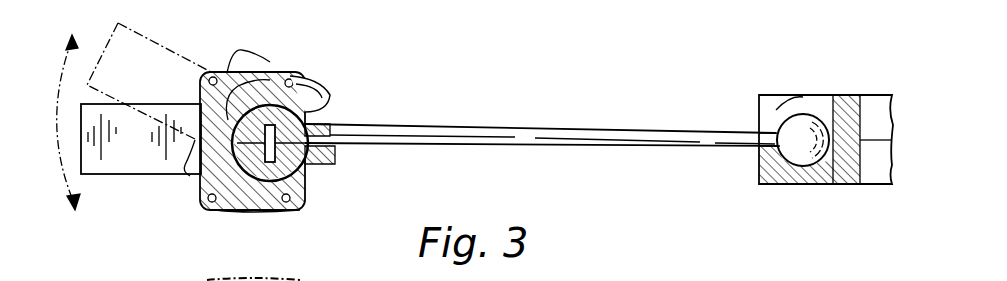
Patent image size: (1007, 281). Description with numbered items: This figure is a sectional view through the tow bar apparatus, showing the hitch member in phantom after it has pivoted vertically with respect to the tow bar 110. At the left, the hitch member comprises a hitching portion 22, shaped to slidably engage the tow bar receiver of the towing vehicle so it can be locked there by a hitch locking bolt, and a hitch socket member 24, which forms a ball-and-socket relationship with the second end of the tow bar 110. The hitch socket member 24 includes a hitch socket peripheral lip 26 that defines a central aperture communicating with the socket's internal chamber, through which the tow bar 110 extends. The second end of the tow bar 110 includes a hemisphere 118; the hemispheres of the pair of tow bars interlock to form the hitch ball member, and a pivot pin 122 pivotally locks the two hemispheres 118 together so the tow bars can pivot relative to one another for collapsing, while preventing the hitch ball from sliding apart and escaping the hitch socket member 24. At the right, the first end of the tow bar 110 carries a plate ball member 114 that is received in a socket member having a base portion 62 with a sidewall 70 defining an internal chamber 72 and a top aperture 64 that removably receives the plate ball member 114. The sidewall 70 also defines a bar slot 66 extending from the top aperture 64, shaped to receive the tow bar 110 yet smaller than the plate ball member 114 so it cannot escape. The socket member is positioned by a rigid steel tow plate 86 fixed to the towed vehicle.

The hitching portion 22 is at (137, 168).
The hitch socket member 24 is at (265, 63).
The hitch socket peripheral lip 26 is at (293, 205).
The base portion 62 is at (845, 180).
The top aperture 64 is at (815, 92).
The bar slot 66 is at (760, 150).
The sidewall 70 is at (833, 100).
The internal chamber 72 is at (786, 172).
The tow plate 86 is at (890, 108).
The tow bar 110 is at (570, 145).
The plate ball member 114 is at (800, 112).
The hemisphere 118 is at (300, 170).
The pivot pin 122 is at (300, 104).